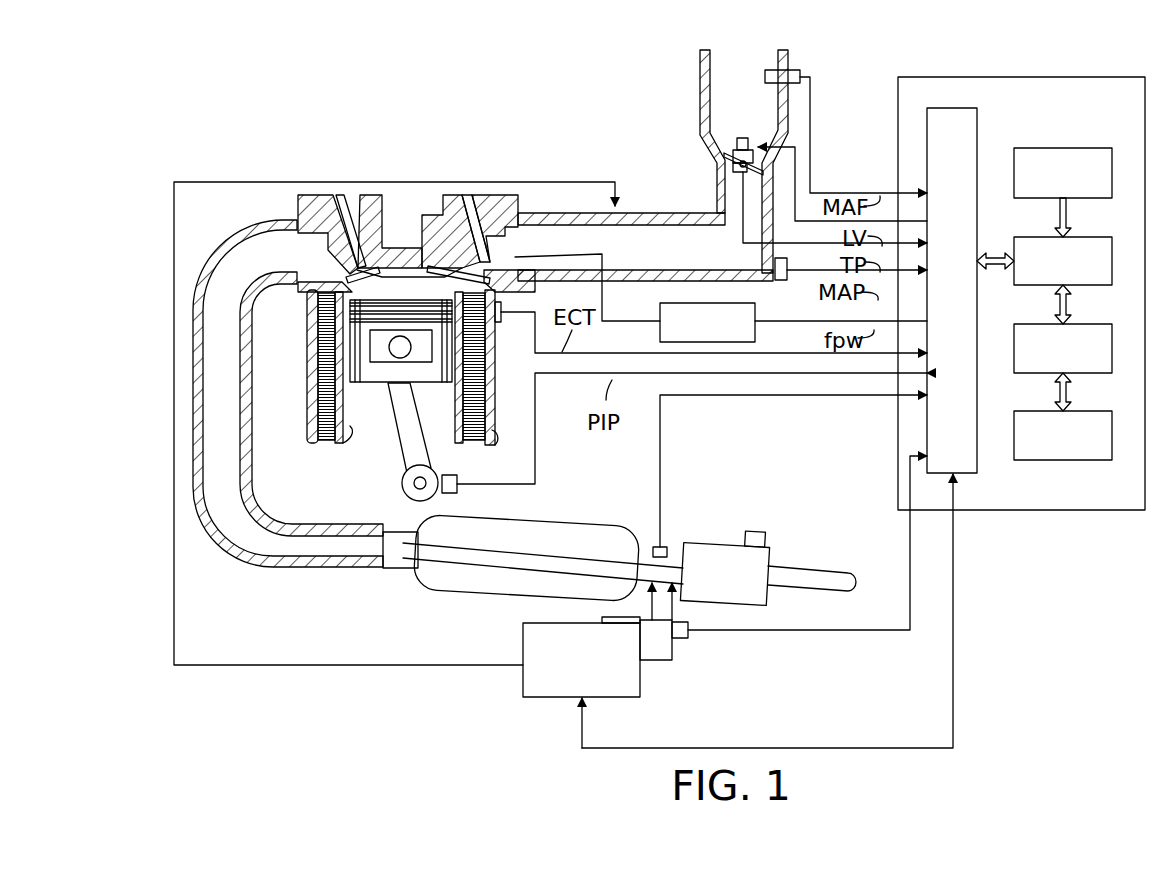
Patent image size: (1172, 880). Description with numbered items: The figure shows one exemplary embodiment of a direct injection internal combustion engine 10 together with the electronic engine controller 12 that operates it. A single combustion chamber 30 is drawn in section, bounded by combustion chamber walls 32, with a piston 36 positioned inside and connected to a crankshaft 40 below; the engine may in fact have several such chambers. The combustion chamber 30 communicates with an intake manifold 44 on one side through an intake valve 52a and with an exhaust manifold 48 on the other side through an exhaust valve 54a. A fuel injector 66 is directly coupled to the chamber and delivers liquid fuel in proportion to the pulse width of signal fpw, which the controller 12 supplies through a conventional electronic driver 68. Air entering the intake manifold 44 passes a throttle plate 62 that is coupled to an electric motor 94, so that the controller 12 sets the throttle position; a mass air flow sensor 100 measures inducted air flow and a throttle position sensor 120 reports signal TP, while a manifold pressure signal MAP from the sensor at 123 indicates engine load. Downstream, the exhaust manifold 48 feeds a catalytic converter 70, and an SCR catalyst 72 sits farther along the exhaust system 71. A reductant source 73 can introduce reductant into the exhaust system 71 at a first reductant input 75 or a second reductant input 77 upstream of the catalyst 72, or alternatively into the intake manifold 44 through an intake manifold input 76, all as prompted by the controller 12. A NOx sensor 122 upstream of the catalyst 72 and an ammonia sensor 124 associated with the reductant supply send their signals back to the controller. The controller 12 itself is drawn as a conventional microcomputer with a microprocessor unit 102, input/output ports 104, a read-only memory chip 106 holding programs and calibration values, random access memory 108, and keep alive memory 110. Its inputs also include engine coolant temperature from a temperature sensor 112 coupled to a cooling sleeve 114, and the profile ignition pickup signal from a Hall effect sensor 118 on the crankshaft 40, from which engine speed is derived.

The direct injection internal combustion engine 10 is at (517, 123).
The electronic engine controller 12 is at (1057, 77).
The combustion chamber 30 is at (312, 333).
The combustion chamber walls 32 is at (353, 436).
The piston 36 is at (383, 367).
The crankshaft 40 is at (402, 488).
The intake manifold 44 is at (680, 264).
The exhaust manifold 48 is at (240, 255).
The intake valve 52a is at (462, 270).
The exhaust valve 54a is at (352, 268).
The throttle plate 62 is at (738, 152).
The fuel injector 66 is at (436, 214).
The electronic driver 68 is at (660, 313).
The catalytic converter 70 is at (575, 518).
The exhaust system 71 is at (655, 548).
The SCR catalyst 72 is at (724, 546).
The reductant source 73 is at (542, 698).
The first reductant input 75 is at (604, 620).
The intake manifold input 76 is at (262, 665).
The second reductant input 77 is at (662, 660).
The electric motor 94 is at (745, 138).
The mass air flow sensor 100 is at (776, 70).
The microprocessor unit 102 is at (1014, 260).
The input/output ports 104 is at (956, 108).
The read-only memory chip 106 is at (1014, 172).
The random access memory 108 is at (1014, 347).
The keep alive memory 110 is at (1014, 435).
The temperature sensor 112 is at (502, 318).
The cooling sleeve 114 is at (497, 400).
The Hall effect sensor 118 is at (458, 483).
The throttle position sensor 120 is at (726, 163).
The NOx sensor 122 is at (662, 547).
The manifold pressure sensor 123 is at (786, 281).
The ammonia sensor 124 is at (688, 631).